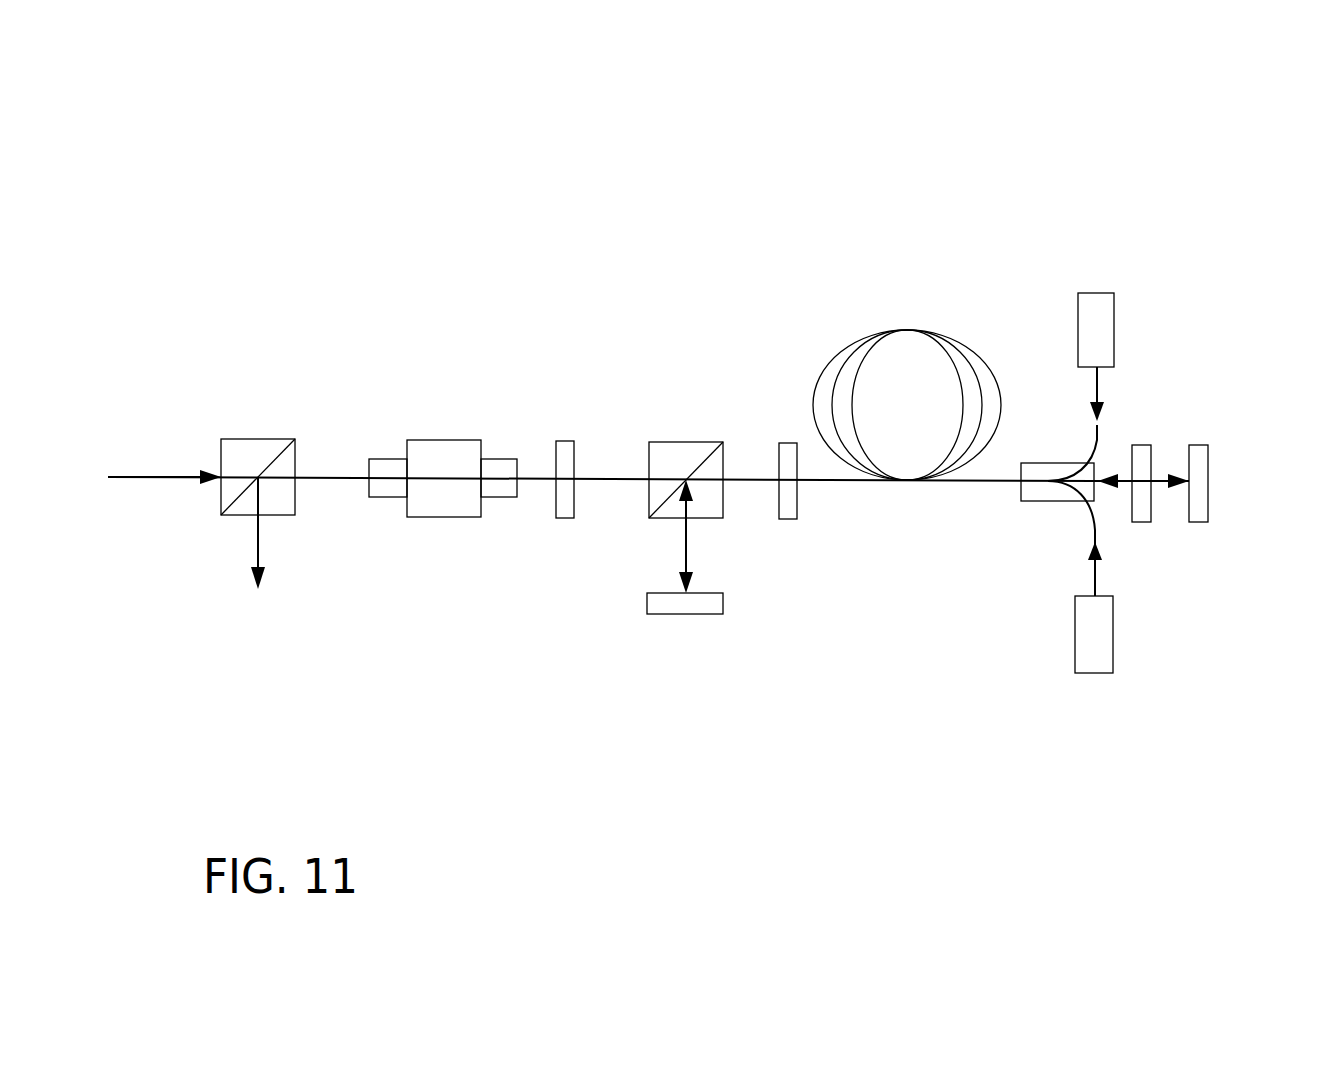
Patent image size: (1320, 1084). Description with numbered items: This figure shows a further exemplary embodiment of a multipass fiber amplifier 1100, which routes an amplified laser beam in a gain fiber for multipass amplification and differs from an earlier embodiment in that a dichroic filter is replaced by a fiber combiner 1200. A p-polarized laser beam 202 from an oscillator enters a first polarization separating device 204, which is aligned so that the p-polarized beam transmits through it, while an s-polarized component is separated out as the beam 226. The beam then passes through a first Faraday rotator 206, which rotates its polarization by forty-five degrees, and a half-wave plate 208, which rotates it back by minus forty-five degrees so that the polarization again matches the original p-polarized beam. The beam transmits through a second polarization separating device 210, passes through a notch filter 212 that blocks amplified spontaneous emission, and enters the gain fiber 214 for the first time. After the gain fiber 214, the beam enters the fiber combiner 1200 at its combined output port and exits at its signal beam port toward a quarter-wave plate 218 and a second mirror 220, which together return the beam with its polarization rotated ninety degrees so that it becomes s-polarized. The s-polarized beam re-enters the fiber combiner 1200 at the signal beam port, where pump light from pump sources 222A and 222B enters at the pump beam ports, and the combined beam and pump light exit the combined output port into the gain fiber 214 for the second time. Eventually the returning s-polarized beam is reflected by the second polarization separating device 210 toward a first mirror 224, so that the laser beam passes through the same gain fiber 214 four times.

The multipass fiber amplifier 1100 is at (332, 200).
The p-polarized laser beam 202 is at (147, 475).
The first polarization separating device 204 is at (285, 439).
The first Faraday rotator 206 is at (466, 440).
The half-wave plate 208 is at (567, 441).
The second polarization separating device 210 is at (668, 441).
The notch filter 212 is at (797, 499).
The gain fiber 214 is at (957, 336).
The quarter-wave plate 218 is at (1143, 445).
The second mirror 220 is at (1200, 445).
The pump source 222A is at (1113, 634).
The pump source 222B is at (1114, 331).
The first mirror 224 is at (723, 603).
The rejected s-polarized beam 226 is at (258, 550).
The fiber combiner 1200 is at (1057, 501).